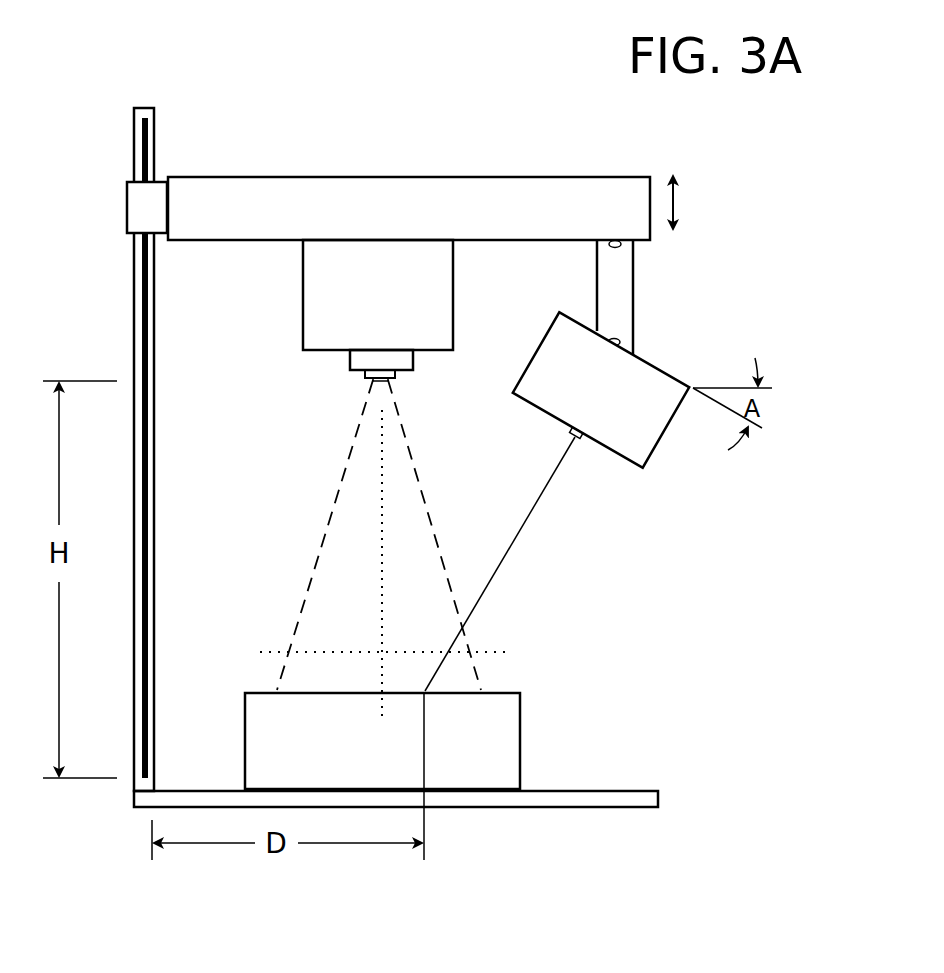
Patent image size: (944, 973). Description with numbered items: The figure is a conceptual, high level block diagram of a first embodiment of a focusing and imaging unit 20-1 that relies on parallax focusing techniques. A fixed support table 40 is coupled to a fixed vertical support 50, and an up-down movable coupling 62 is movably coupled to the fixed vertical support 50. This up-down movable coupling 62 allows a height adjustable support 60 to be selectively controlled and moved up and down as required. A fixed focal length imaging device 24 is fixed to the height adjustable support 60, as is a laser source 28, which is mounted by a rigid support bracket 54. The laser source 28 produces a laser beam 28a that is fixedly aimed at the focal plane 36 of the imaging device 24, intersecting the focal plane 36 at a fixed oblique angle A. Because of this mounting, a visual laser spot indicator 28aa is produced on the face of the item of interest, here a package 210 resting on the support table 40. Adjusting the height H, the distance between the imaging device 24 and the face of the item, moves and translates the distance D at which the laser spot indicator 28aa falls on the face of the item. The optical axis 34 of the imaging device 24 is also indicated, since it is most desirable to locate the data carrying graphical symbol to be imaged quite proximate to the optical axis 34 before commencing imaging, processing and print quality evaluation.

The focusing and imaging unit 20-1 is at (742, 559).
The fixed focal length imaging device 24 is at (450, 265).
The laser source 28 is at (632, 452).
The laser beam 28a is at (512, 564).
The laser spot indicator 28aa is at (424, 689).
The optical axis 34 is at (380, 532).
The focal plane 36 is at (276, 648).
The fixed support table 40 is at (588, 798).
The fixed vertical support 50 is at (150, 395).
The rigid support bracket 54 is at (622, 278).
The height adjustable support 60 is at (388, 184).
The up-down movable coupling 62 is at (153, 192).
The package 210 is at (512, 755).